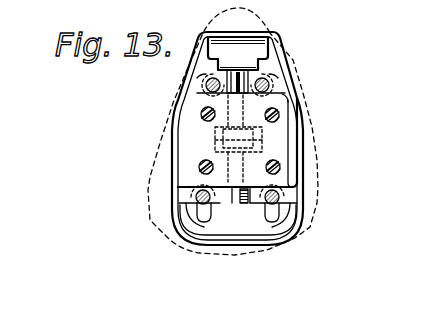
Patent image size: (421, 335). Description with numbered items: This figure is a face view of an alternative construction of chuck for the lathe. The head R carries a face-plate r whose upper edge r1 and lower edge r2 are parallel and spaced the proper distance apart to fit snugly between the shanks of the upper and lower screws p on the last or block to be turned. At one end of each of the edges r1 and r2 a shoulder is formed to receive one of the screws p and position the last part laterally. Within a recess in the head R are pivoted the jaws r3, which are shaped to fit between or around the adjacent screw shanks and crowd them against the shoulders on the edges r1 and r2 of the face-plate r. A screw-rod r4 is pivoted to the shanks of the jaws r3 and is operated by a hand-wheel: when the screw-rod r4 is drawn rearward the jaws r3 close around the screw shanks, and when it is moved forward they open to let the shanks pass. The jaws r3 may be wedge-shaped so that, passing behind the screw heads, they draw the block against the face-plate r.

The head R is at (305, 164).
The face-plate r is at (225, 148).
The upper edge of face-plate r1 is at (256, 76).
The lower edge of face-plate r2 is at (232, 203).
The jaws r3 is at (253, 53).
The screw-rod r4 is at (253, 153).
The screws p is at (270, 116).